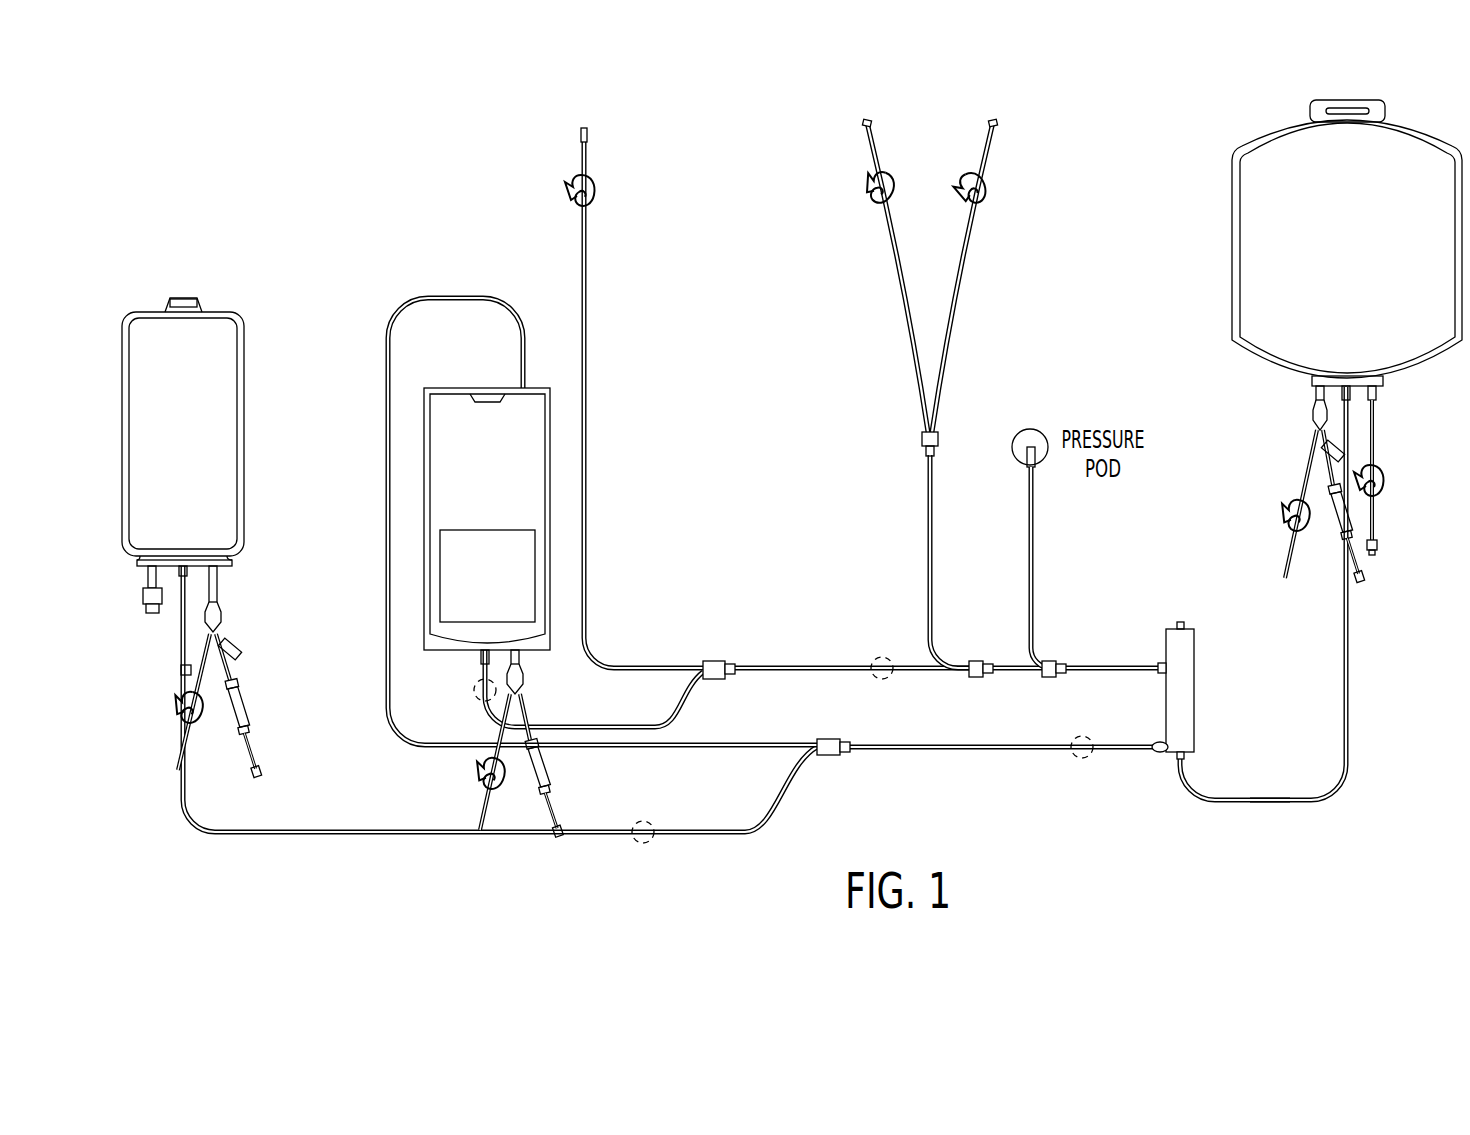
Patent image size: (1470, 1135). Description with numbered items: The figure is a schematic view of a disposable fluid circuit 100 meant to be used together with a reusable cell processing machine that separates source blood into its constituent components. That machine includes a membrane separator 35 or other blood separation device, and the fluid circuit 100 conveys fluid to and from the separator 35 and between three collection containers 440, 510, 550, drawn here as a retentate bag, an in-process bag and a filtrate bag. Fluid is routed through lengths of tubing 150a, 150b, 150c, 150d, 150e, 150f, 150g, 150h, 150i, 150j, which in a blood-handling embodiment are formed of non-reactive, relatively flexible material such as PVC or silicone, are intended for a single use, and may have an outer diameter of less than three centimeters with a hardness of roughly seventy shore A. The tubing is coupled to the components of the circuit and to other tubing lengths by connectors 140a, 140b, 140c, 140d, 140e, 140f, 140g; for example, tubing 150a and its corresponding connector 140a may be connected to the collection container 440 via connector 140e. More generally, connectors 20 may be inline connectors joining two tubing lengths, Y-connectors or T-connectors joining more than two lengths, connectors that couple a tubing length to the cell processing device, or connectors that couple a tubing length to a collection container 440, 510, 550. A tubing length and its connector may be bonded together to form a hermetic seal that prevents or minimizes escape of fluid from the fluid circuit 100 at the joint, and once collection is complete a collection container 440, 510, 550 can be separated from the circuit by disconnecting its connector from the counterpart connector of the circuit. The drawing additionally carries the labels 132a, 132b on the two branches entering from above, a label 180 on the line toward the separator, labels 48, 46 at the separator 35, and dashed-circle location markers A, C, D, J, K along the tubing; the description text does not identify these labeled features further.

The fluid circuit 100 is at (181, 195).
The collection container 440 is at (160, 337).
The collection container 510 is at (460, 391).
The collection container 550 is at (1231, 190).
The connector 140a is at (586, 131).
The connector 140b is at (868, 122).
The connector 140c is at (1020, 99).
The connector 140d is at (1374, 557).
The connector 140e is at (143, 595).
The connector 140f is at (706, 660).
The connector 140g is at (825, 758).
The inlet tube 132a is at (900, 280).
The inlet tube 132b is at (962, 280).
The tubing 150a is at (587, 528).
The tubing 150b is at (787, 668).
The tubing 150c is at (1020, 665).
The tubing 150d is at (1112, 665).
The tubing 150e is at (928, 545).
The tubing 150f is at (690, 702).
The tubing 150g is at (390, 738).
The tubing 150h is at (990, 753).
The tubing 150i is at (355, 835).
The tubing 150j is at (1348, 688).
The connector 180 is at (976, 680).
The membrane separator 35 is at (1197, 660).
The connectors 20 is at (1160, 678).
The filter retentate outlet 48 is at (1164, 757).
The filter filtrate outlet 46 is at (1183, 759).
The location A is at (647, 845).
The location C is at (884, 657).
The location D is at (477, 693).
The location J is at (1083, 762).
The location K is at (1263, 802).